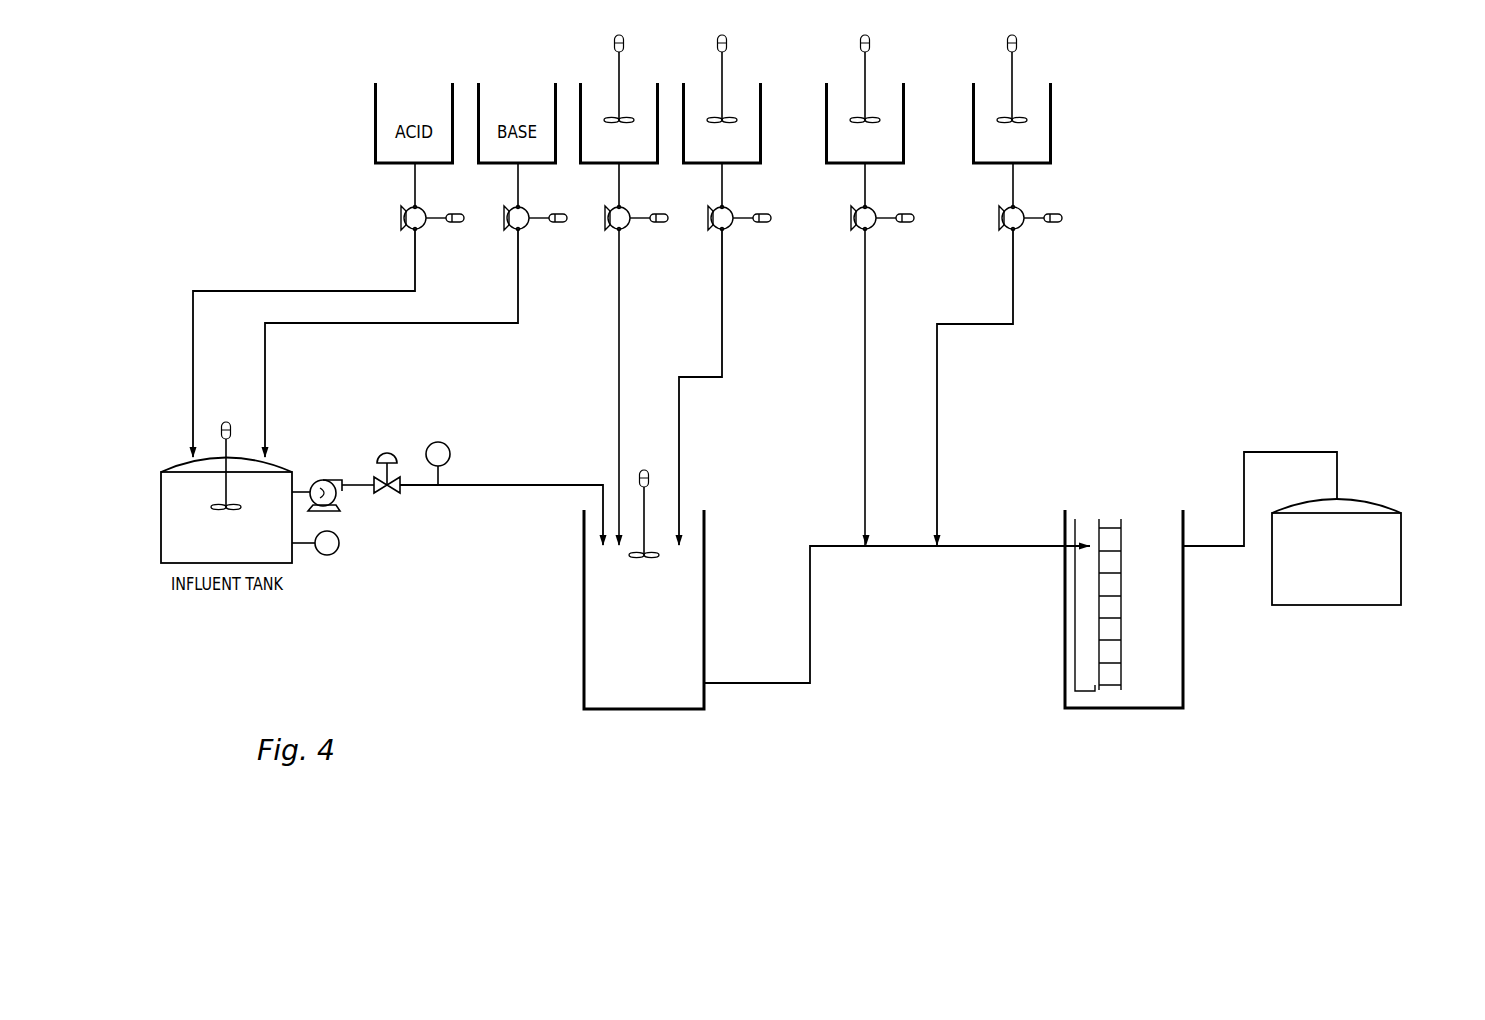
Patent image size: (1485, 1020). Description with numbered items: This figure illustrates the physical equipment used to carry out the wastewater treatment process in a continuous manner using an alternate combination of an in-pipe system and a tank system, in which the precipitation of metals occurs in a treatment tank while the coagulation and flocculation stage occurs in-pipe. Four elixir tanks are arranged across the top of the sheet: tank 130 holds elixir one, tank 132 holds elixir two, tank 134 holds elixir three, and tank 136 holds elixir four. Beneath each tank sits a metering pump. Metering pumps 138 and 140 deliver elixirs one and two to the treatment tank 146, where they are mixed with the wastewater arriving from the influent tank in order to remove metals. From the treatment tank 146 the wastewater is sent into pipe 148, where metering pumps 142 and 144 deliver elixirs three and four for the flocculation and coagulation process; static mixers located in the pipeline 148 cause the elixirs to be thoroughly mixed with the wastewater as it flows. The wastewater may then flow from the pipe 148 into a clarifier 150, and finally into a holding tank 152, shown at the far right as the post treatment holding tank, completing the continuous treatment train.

The tank 130 is at (619, 99).
The tank 132 is at (722, 99).
The tank 134 is at (865, 99).
The tank 136 is at (1012, 99).
The metering pump 138 is at (626, 227).
The metering pump 140 is at (729, 227).
The metering pump 142 is at (872, 227).
The metering pump 144 is at (1020, 227).
The treatment tank 146 is at (704, 588).
The pipe 148 is at (900, 548).
The clarifier 150 is at (1184, 519).
The holding tank 152 is at (1401, 547).